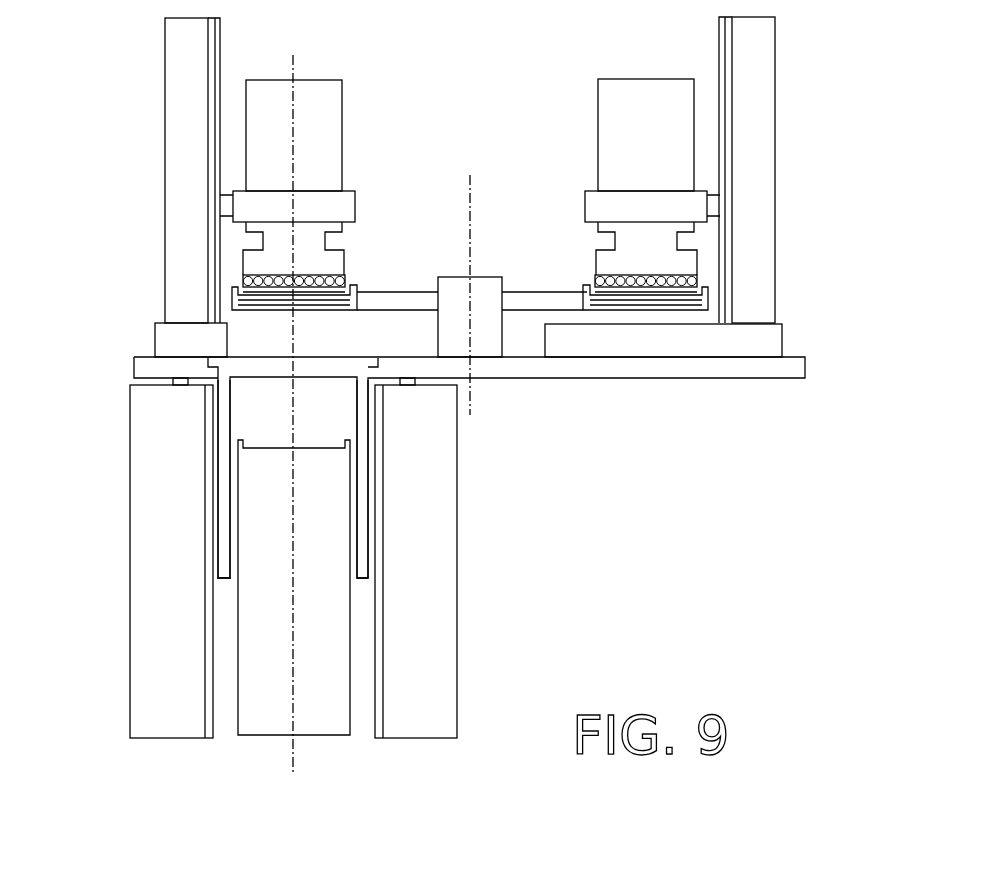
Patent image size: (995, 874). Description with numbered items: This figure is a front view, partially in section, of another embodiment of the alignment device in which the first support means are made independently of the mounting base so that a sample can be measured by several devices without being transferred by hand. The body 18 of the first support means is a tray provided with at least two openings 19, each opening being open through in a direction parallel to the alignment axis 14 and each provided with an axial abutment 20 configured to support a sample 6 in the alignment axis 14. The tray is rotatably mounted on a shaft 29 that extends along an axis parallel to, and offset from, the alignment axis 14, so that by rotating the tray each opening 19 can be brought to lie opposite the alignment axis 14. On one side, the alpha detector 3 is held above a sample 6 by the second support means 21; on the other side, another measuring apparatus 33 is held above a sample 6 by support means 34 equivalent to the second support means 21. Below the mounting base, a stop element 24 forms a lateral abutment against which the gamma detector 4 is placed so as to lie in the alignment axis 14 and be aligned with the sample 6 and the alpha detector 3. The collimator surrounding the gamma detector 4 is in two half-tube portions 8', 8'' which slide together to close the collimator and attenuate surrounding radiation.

The alpha detector 3 is at (322, 130).
The gamma detector 4 is at (328, 498).
The sample 6 is at (232, 290).
The collimator portion 8' is at (140, 561).
The collimator portion 8'' is at (454, 561).
The alignment axis 14 is at (300, 58).
The body 18 is at (522, 300).
The opening 19 is at (265, 316).
The axial abutment 20 is at (343, 310).
The second support means 21 is at (148, 150).
The stop element 24 is at (367, 545).
The shaft 29 is at (446, 278).
The other measuring apparatus 33 is at (617, 132).
The support means 34 is at (755, 167).